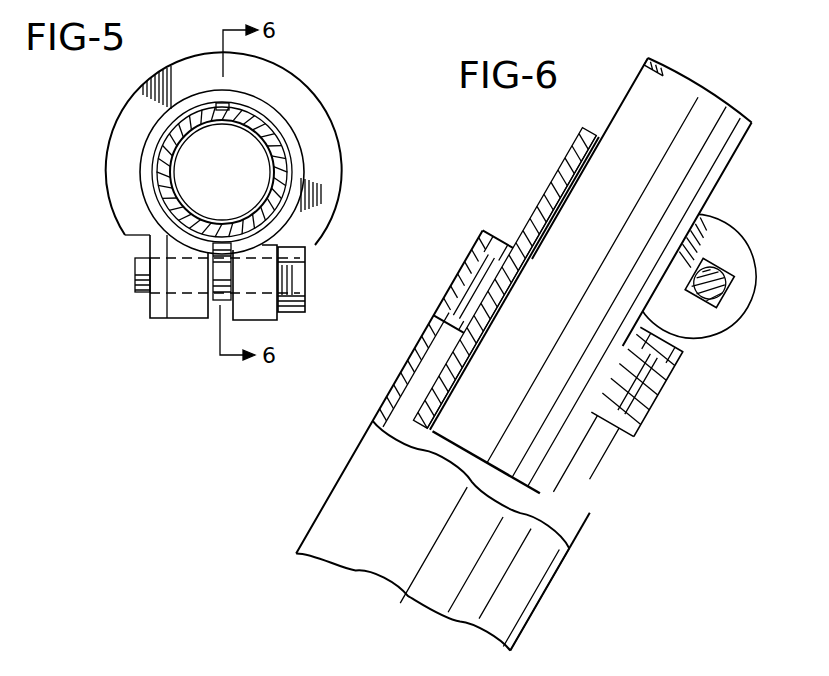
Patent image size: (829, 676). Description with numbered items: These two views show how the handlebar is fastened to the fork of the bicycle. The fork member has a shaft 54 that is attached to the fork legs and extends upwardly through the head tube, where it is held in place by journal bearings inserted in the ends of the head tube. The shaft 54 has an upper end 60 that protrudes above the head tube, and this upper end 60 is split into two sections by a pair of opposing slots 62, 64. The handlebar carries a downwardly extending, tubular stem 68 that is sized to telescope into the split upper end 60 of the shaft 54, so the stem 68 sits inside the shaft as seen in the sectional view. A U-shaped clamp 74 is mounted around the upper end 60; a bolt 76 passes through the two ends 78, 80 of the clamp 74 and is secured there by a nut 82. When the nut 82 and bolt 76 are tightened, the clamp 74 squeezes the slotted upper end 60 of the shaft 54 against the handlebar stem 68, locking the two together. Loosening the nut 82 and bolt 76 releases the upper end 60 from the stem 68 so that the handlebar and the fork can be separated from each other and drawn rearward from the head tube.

In FIG. 5, the shaft 54 is at (279, 131).
In FIG. 5, the upper end 60 is at (254, 113).
In FIG. 5, the slot 62 is at (223, 228).
In FIG. 6, the slot 62 is at (712, 210).
In FIG. 5, the slot 64 is at (223, 100).
In FIG. 5, the tubular stem 68 is at (275, 173).
In FIG. 5, the U-shaped clamp 74 is at (290, 200).
In FIG. 5, the bolt 76 is at (292, 278).
In FIG. 5, the clamp end 78 is at (182, 273).
In FIG. 5, the clamp end 80 is at (253, 277).
In FIG. 5, the nut 82 is at (157, 302).